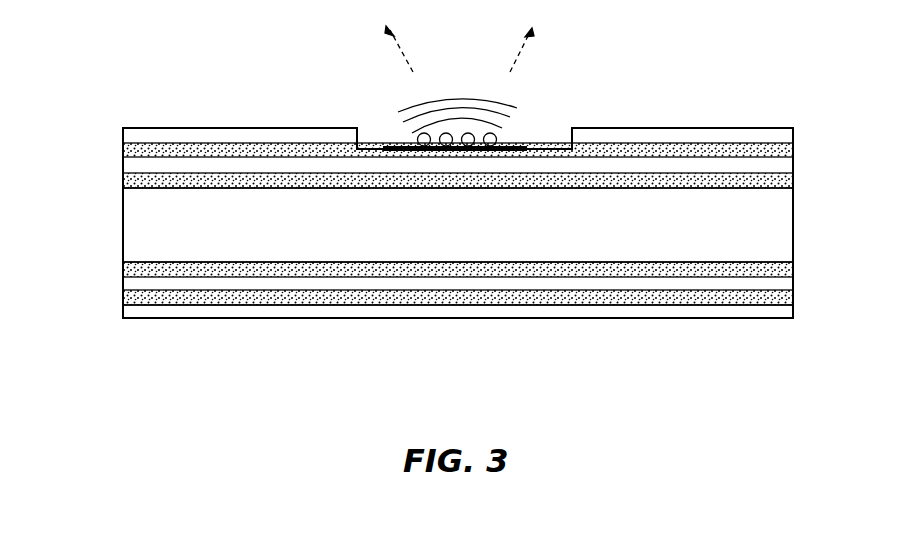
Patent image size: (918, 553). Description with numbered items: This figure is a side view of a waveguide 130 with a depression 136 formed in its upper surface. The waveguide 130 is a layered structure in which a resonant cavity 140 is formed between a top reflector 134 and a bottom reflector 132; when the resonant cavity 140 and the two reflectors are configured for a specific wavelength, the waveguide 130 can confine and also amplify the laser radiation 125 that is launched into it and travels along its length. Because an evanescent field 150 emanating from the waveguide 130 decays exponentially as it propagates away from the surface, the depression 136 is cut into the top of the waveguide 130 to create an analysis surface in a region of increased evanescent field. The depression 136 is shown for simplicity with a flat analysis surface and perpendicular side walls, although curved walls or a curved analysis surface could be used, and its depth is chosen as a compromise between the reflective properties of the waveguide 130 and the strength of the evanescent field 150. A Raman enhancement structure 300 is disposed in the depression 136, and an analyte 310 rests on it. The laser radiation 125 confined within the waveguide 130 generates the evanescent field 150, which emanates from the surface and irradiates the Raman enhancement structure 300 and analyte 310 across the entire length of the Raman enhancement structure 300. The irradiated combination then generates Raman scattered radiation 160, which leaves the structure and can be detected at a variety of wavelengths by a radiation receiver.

The laser radiation 125 is at (100, 228).
The waveguide 130 is at (688, 318).
The bottom reflector 132 is at (806, 258).
The top reflector 134 is at (806, 127).
The depression 136 is at (368, 148).
The resonant cavity 140 is at (806, 188).
The evanescent field 150 is at (435, 104).
The Raman scattered radiation 160 is at (406, 55).
The Raman enhancement structure 300 is at (518, 144).
The analyte 310 is at (418, 139).